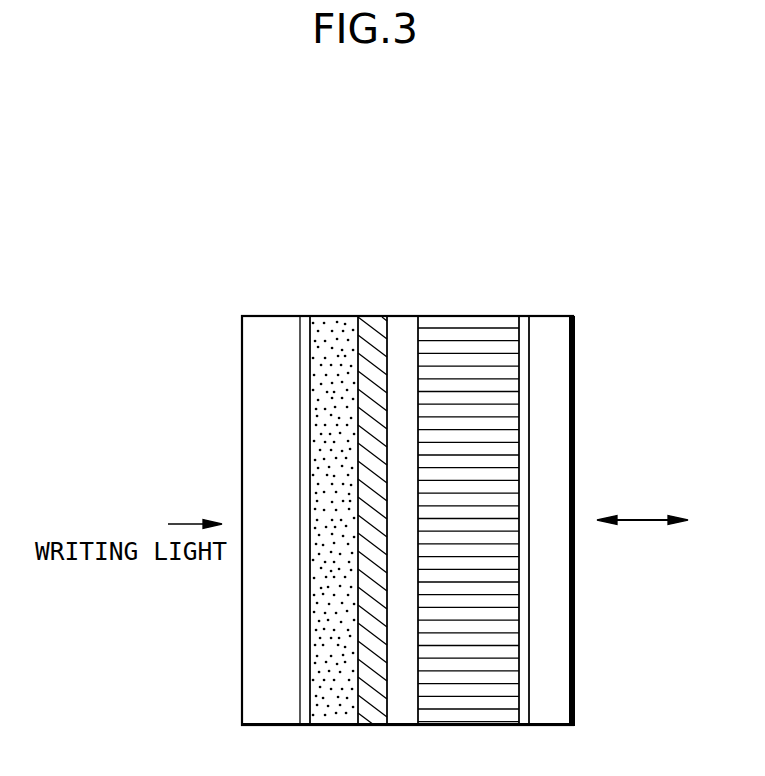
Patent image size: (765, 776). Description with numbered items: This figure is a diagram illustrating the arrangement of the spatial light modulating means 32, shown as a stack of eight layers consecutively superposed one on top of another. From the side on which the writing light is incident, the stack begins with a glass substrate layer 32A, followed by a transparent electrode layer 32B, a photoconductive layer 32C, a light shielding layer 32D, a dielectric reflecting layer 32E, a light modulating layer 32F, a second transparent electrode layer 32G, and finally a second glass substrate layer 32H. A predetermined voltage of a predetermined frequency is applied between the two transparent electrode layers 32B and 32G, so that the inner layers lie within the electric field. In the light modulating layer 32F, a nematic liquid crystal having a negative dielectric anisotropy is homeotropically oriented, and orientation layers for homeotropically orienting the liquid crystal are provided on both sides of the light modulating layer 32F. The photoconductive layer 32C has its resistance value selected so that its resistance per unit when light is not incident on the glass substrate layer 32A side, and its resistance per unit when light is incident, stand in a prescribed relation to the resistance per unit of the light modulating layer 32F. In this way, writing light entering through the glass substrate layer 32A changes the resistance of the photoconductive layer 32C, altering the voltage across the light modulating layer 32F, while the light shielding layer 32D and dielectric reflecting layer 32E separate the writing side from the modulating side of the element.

The spatial light modulating means 32 is at (450, 208).
The glass substrate layer 32A is at (257, 314).
The transparent electrode layer 32B is at (301, 315).
The photoconductive layer 32C is at (337, 314).
The light shielding layer 32D is at (370, 315).
The dielectric reflecting layer 32E is at (405, 314).
The light modulating layer 32F is at (465, 315).
The transparent electrode layer 32G is at (520, 314).
The glass substrate layer 32H is at (547, 315).